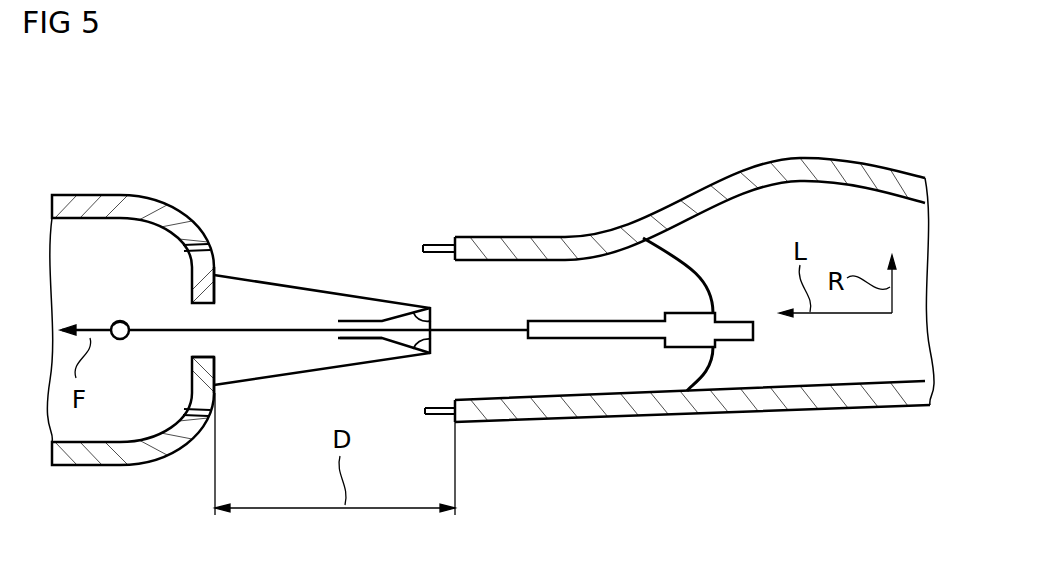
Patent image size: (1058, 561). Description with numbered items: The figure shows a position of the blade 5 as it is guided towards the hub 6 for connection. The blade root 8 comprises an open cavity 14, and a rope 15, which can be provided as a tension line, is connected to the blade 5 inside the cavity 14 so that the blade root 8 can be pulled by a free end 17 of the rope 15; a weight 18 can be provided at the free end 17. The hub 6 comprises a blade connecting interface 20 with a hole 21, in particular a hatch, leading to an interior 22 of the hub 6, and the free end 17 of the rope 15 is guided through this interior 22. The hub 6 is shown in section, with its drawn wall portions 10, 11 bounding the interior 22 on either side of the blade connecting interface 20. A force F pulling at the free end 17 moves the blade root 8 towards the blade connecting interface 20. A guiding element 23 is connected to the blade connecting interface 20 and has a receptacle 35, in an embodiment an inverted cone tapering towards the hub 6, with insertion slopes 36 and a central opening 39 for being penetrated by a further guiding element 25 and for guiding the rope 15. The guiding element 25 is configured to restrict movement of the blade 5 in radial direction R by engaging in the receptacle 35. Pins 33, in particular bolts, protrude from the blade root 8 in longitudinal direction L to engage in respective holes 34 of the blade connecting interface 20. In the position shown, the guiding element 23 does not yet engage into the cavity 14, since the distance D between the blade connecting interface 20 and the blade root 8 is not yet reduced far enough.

The blade 5 is at (598, 192).
The hub 6 is at (130, 304).
The blade root 8 is at (690, 169).
The lower wall of outer tube 10 is at (772, 408).
The upper wall of outer tube 11 is at (812, 157).
The cavity 14 is at (545, 295).
The rope 15 is at (156, 334).
The free end 17 is at (122, 320).
The weight 18 is at (118, 340).
The blade connecting interface 20 is at (225, 259).
The hole 21 is at (205, 349).
The interior 22 is at (72, 218).
The guiding element 23 is at (258, 265).
The guiding element 25 is at (584, 345).
The pins 33 is at (437, 243).
The holes 34 is at (193, 244).
The receptacle 35 is at (383, 308).
The insertion slopes 36 is at (433, 309).
The central opening 39 is at (337, 339).